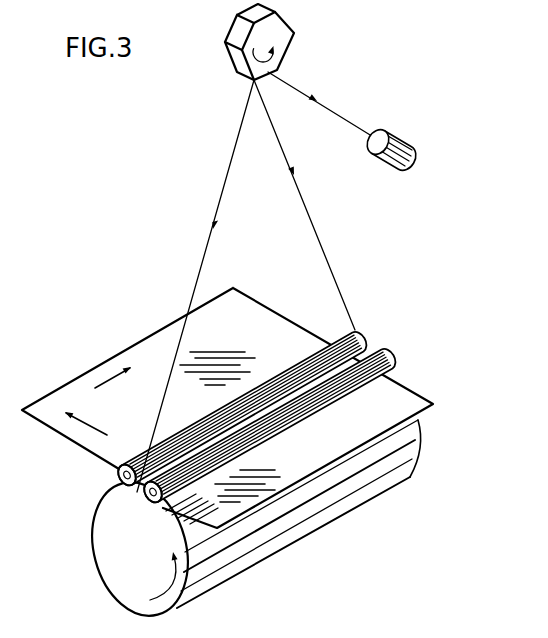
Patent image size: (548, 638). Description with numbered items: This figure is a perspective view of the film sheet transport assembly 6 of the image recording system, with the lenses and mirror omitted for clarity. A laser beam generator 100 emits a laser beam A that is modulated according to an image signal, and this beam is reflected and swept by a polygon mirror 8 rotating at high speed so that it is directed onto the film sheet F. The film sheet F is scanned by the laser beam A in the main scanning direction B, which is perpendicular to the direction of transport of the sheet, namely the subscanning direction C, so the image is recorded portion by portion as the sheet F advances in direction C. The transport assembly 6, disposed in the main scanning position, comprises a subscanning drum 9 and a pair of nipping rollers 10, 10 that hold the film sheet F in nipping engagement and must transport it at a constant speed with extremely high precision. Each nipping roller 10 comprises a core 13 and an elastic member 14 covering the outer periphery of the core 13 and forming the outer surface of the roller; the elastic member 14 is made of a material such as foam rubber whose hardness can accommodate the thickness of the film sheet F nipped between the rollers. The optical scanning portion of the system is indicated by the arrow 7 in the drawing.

The transport assembly 6 is at (494, 315).
The optical scanning unit 7 is at (442, 116).
The polygon mirror 8 is at (283, 27).
The laser beam generator 100 is at (397, 133).
The subscanning drum 9 is at (322, 498).
The nipping rollers 10 is at (357, 331).
The core 13 is at (112, 478).
The elastic member 14 is at (114, 470).
The film sheet F is at (404, 400).
The laser beam A is at (229, 166).
The main scanning direction B is at (116, 382).
The subscanning direction C is at (89, 421).